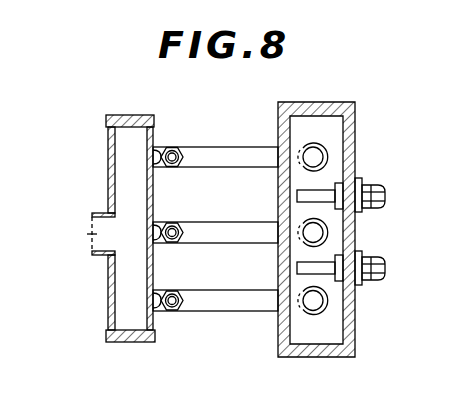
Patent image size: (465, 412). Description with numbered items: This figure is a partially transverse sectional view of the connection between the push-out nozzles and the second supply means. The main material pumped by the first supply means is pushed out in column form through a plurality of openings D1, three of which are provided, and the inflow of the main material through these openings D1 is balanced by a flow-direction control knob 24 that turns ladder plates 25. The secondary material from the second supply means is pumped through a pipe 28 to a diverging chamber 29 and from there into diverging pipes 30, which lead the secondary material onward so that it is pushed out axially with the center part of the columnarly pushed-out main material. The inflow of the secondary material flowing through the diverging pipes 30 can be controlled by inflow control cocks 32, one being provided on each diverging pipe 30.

The nut 24 is at (386, 195).
The bolt 25 is at (322, 192).
The bracket 28 is at (106, 232).
The bracket wall 29 is at (130, 303).
The rod 30 is at (241, 168).
The nut 32 is at (174, 148).
The hole diameter D1 is at (326, 150).